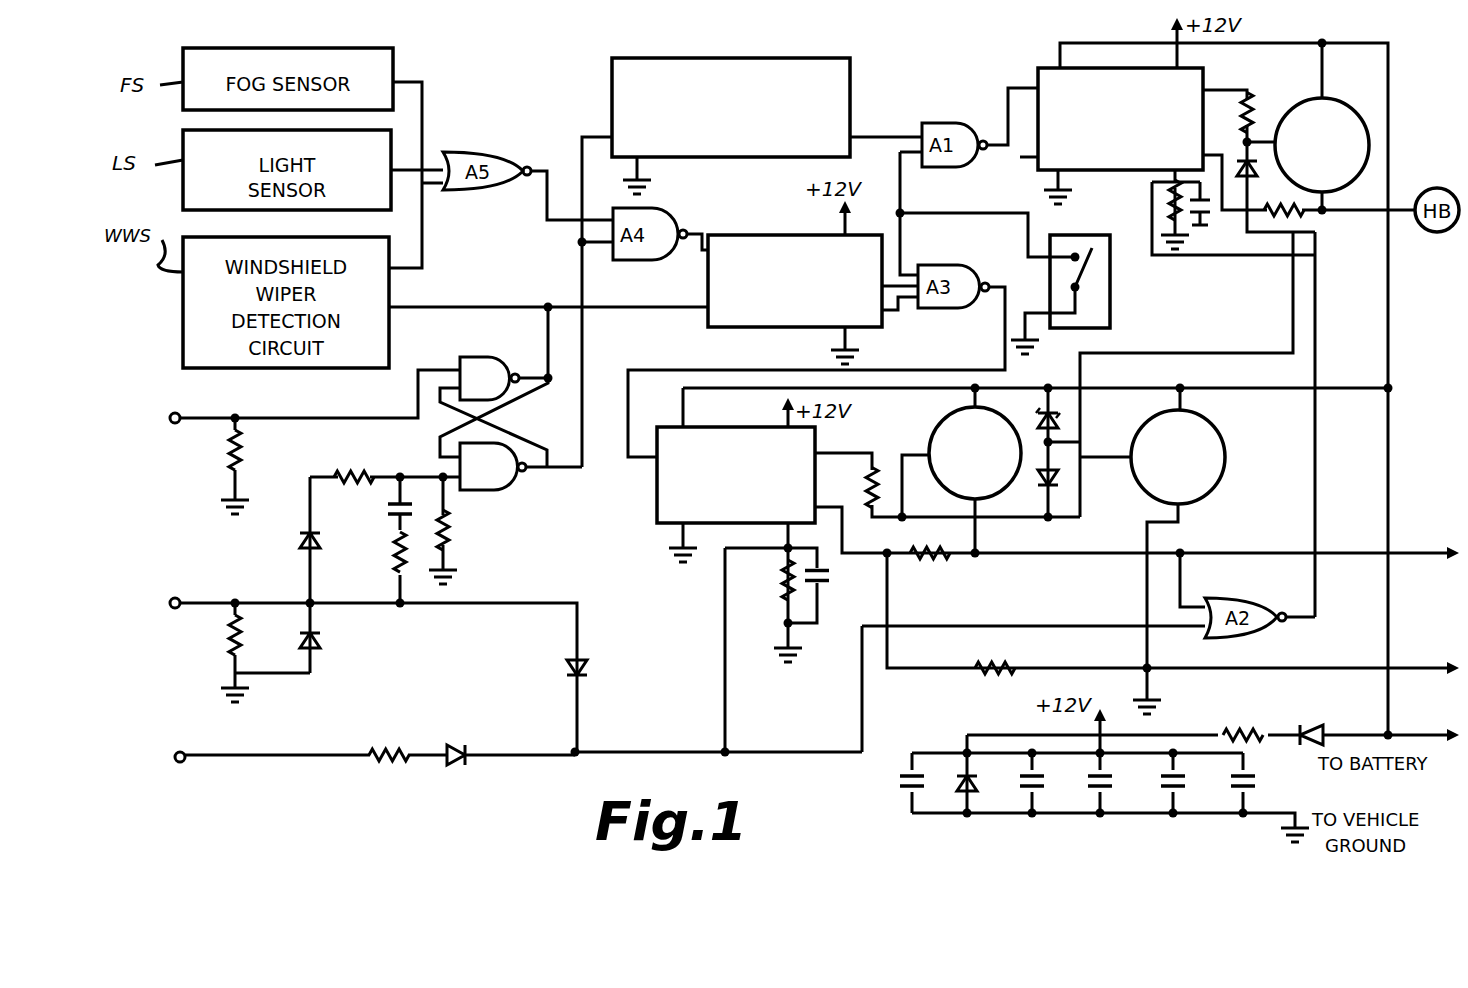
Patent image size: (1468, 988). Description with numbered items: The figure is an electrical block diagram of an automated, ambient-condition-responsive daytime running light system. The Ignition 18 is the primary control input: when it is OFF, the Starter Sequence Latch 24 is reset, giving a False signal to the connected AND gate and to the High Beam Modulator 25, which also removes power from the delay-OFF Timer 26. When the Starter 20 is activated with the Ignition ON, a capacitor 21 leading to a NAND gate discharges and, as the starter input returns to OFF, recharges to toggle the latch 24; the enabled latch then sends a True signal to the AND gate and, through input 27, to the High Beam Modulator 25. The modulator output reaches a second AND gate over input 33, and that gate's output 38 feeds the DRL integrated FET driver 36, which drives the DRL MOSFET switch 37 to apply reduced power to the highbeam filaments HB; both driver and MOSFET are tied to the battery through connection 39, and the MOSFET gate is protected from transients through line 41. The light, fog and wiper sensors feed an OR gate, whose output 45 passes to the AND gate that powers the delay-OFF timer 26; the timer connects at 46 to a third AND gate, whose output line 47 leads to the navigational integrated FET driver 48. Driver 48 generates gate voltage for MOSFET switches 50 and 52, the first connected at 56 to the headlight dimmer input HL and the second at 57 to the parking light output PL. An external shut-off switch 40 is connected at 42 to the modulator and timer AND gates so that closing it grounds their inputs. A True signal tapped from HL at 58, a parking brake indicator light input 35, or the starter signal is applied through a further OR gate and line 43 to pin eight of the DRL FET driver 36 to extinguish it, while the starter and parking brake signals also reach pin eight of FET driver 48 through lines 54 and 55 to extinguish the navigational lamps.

The Ignition input 18 is at (172, 421).
The Starter input 20 is at (172, 606).
The capacitor 21 is at (388, 518).
The Starter Sequence Latch 24 is at (435, 430).
The High Beam Modulator 25 is at (612, 64).
The delay-OFF Timer 26 is at (745, 235).
The input to High Beam Modulator 27 is at (582, 272).
The input from High Beam Modulator to AND gate A1 33 is at (910, 100).
The parking brake indicator light input 35 is at (175, 757).
The DRL integrated FET driver 36 is at (1038, 62).
The DRL MOSFET switch 37 is at (1303, 102).
The output from AND gate A1 38 is at (1008, 105).
The connection to positive side of vehicle battery 39 is at (1390, 325).
The external shut-off switch 40 is at (1045, 272).
The line protecting MOSFET gate 41 is at (1297, 240).
The connection of external shut-off switch to AND gates 42 is at (905, 191).
The line from OR gate A2 to DRL FET driver 43 is at (1373, 310).
The output of OR gate A5 45 is at (537, 203).
The connection from delay-OFF timer to AND gate A3 46 is at (898, 312).
The A3 gate output line to NAV FET driver 47 is at (660, 370).
The navigational integrated FET driver 48 is at (657, 507).
The headlight MOSFET switch 50 is at (929, 428).
The parking light MOSFET switch 52 is at (1222, 432).
The shut-OFF signal line 54 is at (1012, 626).
The shut-OFF signal line 55 is at (662, 750).
The connection of MOSFET 50 to HL 56 is at (1057, 556).
The connection of MOSFET 52 to PL 57 is at (1330, 668).
The tap from headlight dimmer switch junction HL 58 is at (1183, 575).